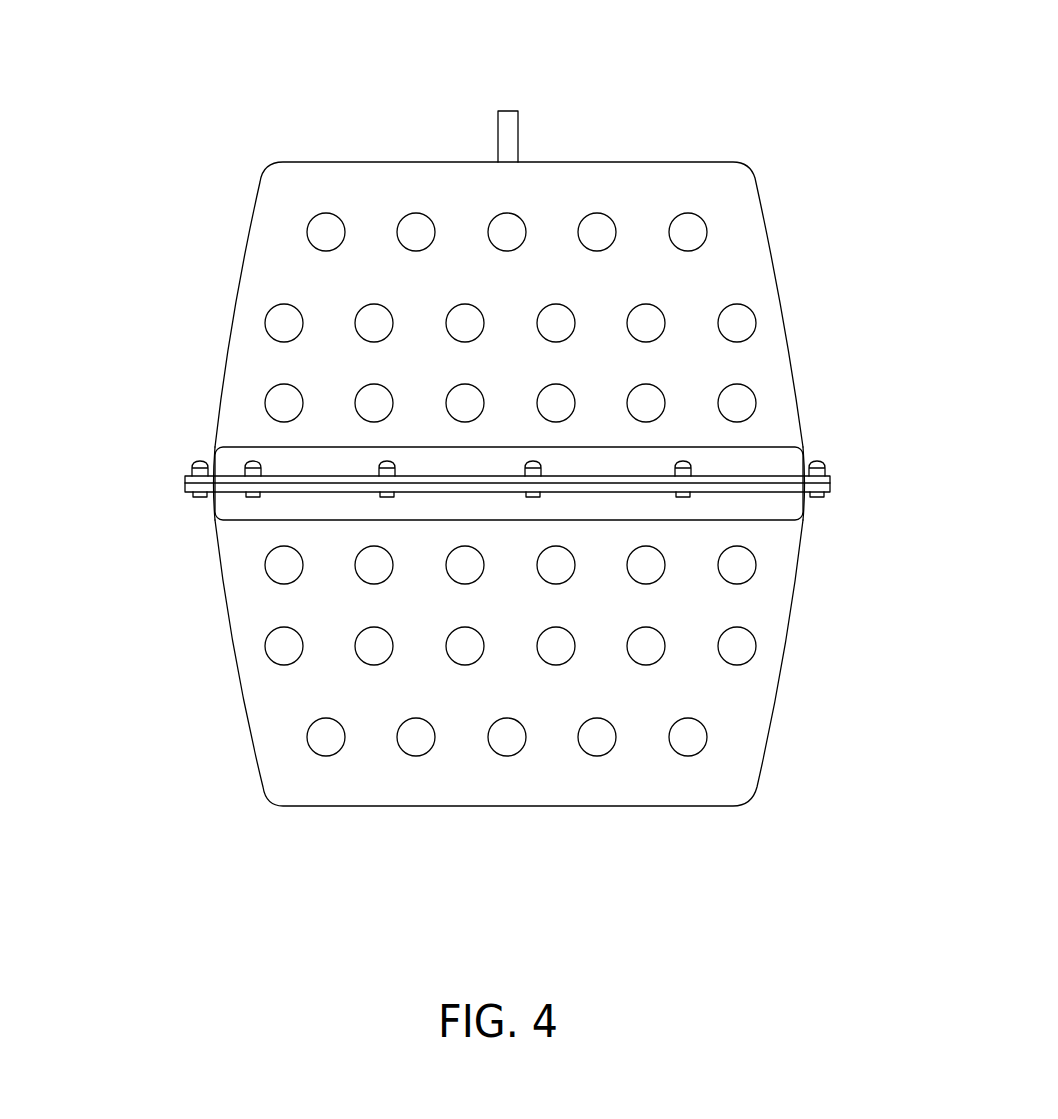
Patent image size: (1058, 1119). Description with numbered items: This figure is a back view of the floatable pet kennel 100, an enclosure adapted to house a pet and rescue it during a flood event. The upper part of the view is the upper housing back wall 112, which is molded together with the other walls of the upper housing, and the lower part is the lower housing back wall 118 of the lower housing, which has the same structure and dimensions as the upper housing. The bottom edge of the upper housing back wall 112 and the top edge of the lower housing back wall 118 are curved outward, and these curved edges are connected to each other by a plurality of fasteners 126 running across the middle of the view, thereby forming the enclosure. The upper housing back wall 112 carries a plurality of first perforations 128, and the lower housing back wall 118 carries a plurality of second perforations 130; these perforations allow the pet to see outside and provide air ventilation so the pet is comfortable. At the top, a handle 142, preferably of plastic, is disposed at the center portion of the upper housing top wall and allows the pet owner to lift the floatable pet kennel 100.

The floatable pet kennel 100 is at (196, 102).
The upper housing back wall 112 is at (730, 255).
The lower housing back wall 118 is at (730, 697).
The fasteners 126 is at (830, 475).
The first perforations 128 is at (287, 403).
The second perforations 130 is at (688, 757).
The handle 142 is at (508, 111).